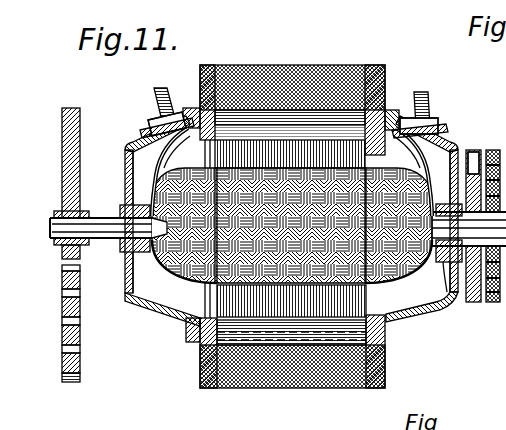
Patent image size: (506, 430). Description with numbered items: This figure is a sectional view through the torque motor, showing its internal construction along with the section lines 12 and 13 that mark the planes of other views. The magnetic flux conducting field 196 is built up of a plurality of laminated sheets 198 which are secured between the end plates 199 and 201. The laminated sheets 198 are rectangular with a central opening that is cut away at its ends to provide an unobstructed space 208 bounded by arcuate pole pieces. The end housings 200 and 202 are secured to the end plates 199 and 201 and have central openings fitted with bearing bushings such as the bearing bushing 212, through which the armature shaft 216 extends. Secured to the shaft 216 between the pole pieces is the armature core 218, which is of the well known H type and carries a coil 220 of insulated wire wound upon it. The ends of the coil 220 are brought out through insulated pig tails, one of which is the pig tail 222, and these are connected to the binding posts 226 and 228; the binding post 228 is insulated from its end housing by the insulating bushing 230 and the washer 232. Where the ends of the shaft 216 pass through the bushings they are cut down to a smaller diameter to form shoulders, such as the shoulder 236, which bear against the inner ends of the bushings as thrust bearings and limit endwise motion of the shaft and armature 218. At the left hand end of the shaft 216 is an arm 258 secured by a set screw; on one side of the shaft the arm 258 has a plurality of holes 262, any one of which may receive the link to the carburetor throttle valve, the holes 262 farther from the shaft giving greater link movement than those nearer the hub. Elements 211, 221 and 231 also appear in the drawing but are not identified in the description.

The section line 12- 12 is at (262, 33).
The section line 13- 13 is at (463, 150).
The magnetic flux conducting field 196 is at (330, 64).
The laminated sheets 198 is at (292, 101).
The end plate 199 is at (200, 384).
The end housing 200 is at (158, 312).
The end plate 201 is at (343, 128).
The end housing 202 is at (452, 310).
The unobstructed space 208 is at (396, 112).
The rotor core 211 is at (404, 240).
The bearing bushing 212 is at (122, 244).
The armature shaft 216 is at (112, 217).
The armature core 218 is at (200, 334).
The coil 220 is at (192, 270).
The right shell band 221 is at (404, 176).
The pig tail 222 is at (128, 150).
The binding post 226 is at (150, 92).
The binding post 228 is at (424, 92).
The insulating bushing 230 is at (457, 150).
The left end plate 231 is at (125, 286).
The washer 232 is at (442, 136).
The shoulder 236 is at (440, 258).
The arm 258 is at (62, 122).
The holes 262 is at (62, 322).